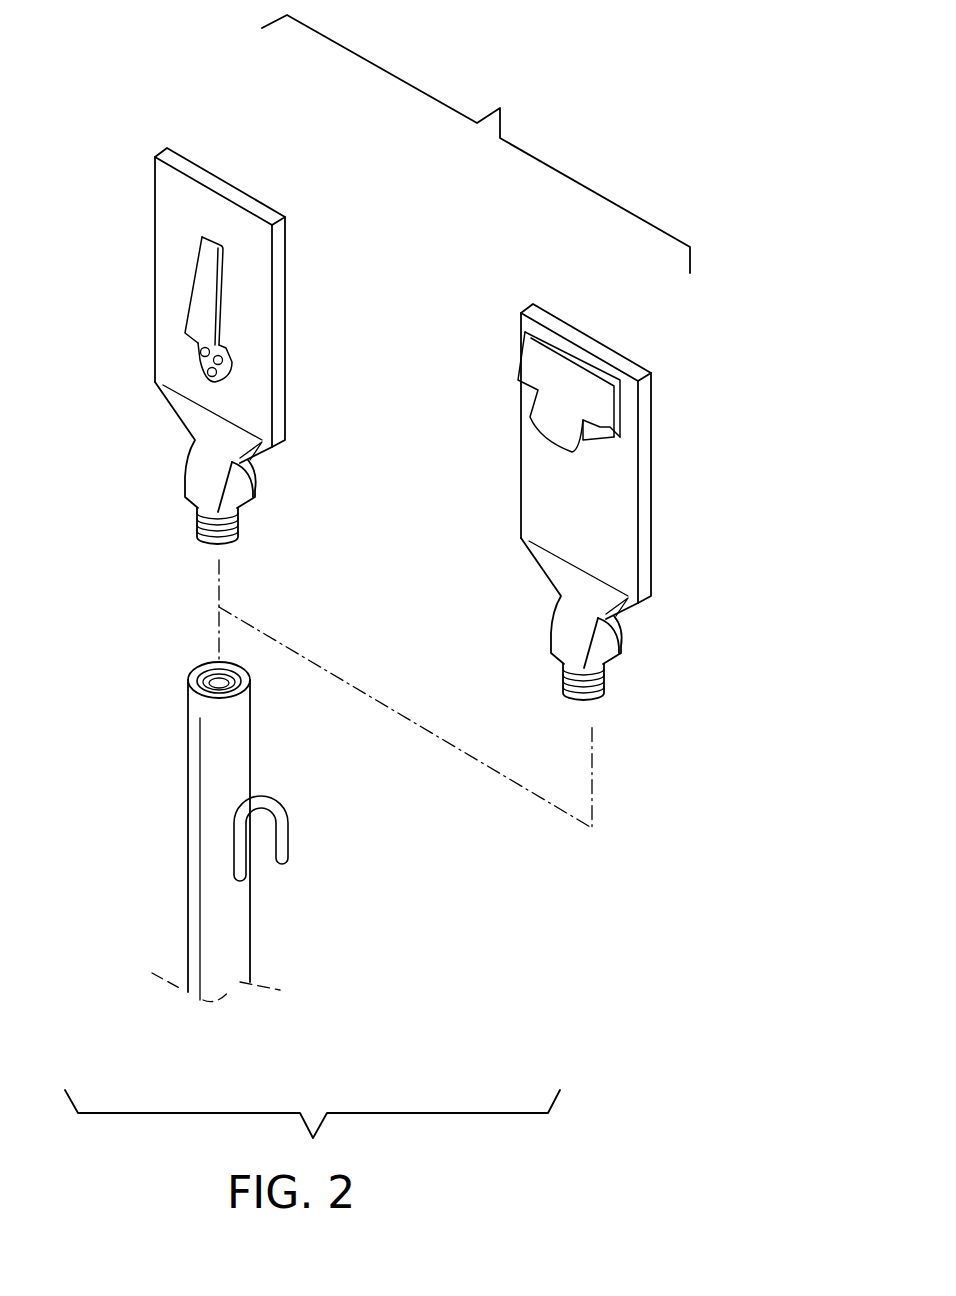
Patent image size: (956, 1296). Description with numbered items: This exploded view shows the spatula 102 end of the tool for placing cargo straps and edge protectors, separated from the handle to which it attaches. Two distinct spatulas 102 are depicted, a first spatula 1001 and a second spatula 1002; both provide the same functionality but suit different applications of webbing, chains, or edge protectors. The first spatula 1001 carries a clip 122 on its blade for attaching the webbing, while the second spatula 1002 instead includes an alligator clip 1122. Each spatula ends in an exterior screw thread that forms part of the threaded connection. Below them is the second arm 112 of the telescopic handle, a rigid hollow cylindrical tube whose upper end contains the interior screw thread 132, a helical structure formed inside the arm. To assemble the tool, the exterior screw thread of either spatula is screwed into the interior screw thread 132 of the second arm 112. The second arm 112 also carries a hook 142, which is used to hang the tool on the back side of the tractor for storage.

The spatula 102 is at (476, 144).
The first spatula 1001 is at (272, 208).
The second spatula 1002 is at (620, 357).
The clip 122 is at (200, 303).
The alligator clip 1122 is at (527, 360).
The interior screw thread 132 is at (207, 677).
The second arm 112 is at (247, 757).
The hook 142 is at (283, 838).